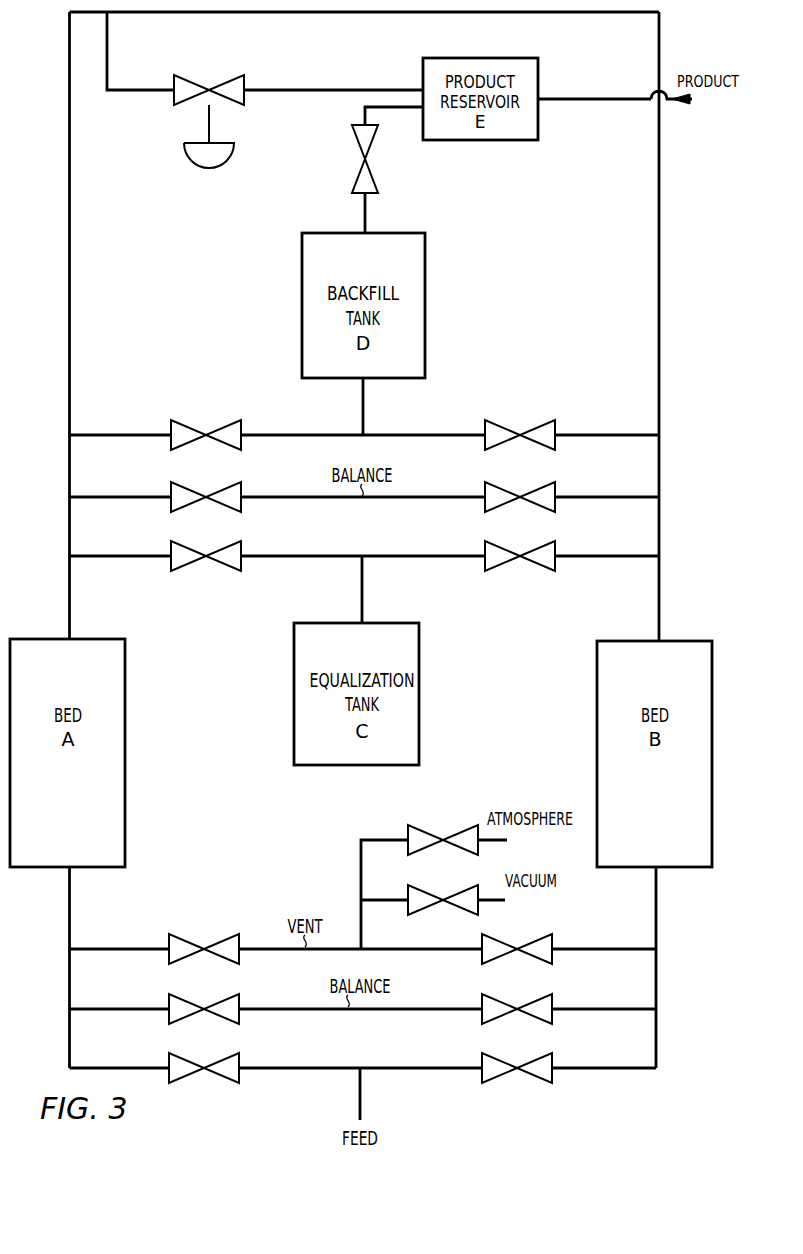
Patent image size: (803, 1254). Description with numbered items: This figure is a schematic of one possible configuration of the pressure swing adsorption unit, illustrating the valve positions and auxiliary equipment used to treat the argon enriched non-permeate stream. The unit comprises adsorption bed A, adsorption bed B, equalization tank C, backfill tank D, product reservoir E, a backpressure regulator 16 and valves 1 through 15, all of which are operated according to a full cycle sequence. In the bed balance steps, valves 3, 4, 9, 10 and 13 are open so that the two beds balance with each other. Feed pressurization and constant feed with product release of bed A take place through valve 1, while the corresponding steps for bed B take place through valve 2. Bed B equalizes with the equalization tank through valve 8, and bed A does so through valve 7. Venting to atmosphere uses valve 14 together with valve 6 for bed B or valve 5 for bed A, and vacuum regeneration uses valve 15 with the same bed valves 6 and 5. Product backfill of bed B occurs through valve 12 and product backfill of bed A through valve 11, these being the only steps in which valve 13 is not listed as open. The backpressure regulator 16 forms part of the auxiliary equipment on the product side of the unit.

The valve 1 is at (204, 1068).
The valve 2 is at (517, 1068).
The valve 3 is at (204, 1009).
The valve 4 is at (517, 1009).
The valve 5 is at (204, 949).
The valve 6 is at (517, 949).
The valve 7 is at (206, 556).
The valve 8 is at (520, 556).
The valve 9 is at (206, 497).
The valve 10 is at (520, 497).
The valve 11 is at (206, 435).
The valve 12 is at (520, 435).
The valve 13 is at (365, 159).
The valve 14 is at (443, 840).
The valve 15 is at (443, 900).
The backpressure regulator 16 is at (209, 90).